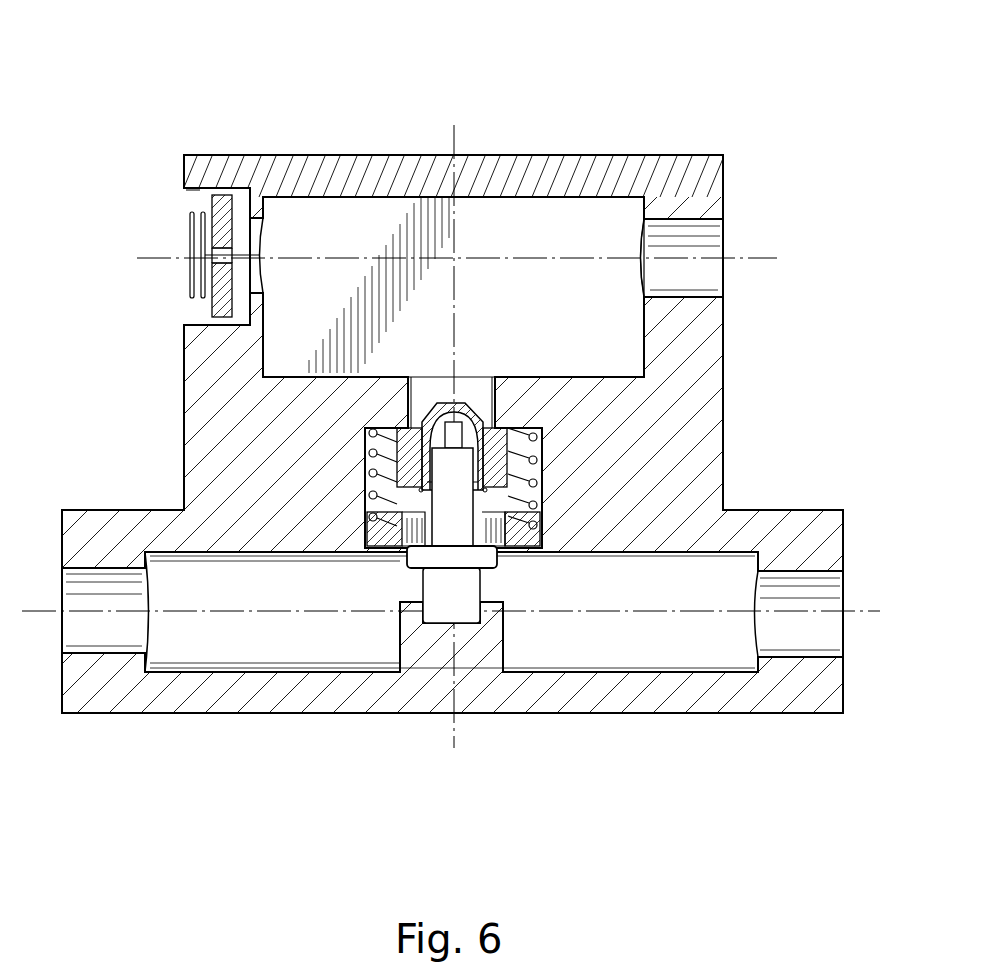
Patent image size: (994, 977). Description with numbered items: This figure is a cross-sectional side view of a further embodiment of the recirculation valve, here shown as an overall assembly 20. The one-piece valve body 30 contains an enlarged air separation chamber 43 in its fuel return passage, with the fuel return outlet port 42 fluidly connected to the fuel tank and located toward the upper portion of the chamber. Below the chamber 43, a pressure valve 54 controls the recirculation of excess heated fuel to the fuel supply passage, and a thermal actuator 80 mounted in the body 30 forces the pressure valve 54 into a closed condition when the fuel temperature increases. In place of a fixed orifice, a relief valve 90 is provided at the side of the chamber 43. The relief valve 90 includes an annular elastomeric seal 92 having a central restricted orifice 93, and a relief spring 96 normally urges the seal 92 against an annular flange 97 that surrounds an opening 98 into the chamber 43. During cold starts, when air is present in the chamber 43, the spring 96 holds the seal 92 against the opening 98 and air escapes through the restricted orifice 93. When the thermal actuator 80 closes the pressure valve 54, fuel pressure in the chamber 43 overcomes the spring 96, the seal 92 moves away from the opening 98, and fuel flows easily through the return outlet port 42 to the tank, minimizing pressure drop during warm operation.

The valve apparatus 20 is at (773, 90).
The valve body 30 is at (710, 410).
The fuel return outlet port 42 is at (197, 193).
The air separation chamber 43 is at (527, 326).
The pressure valve 54 is at (326, 454).
The thermal actuator 80 is at (472, 592).
The relief valve 90 is at (180, 307).
The annular elastomeric seal 92 is at (222, 197).
The central restricted orifice 93 is at (218, 262).
The relief spring 96 is at (190, 215).
The annular flange 97 is at (258, 207).
The opening 98 is at (258, 242).